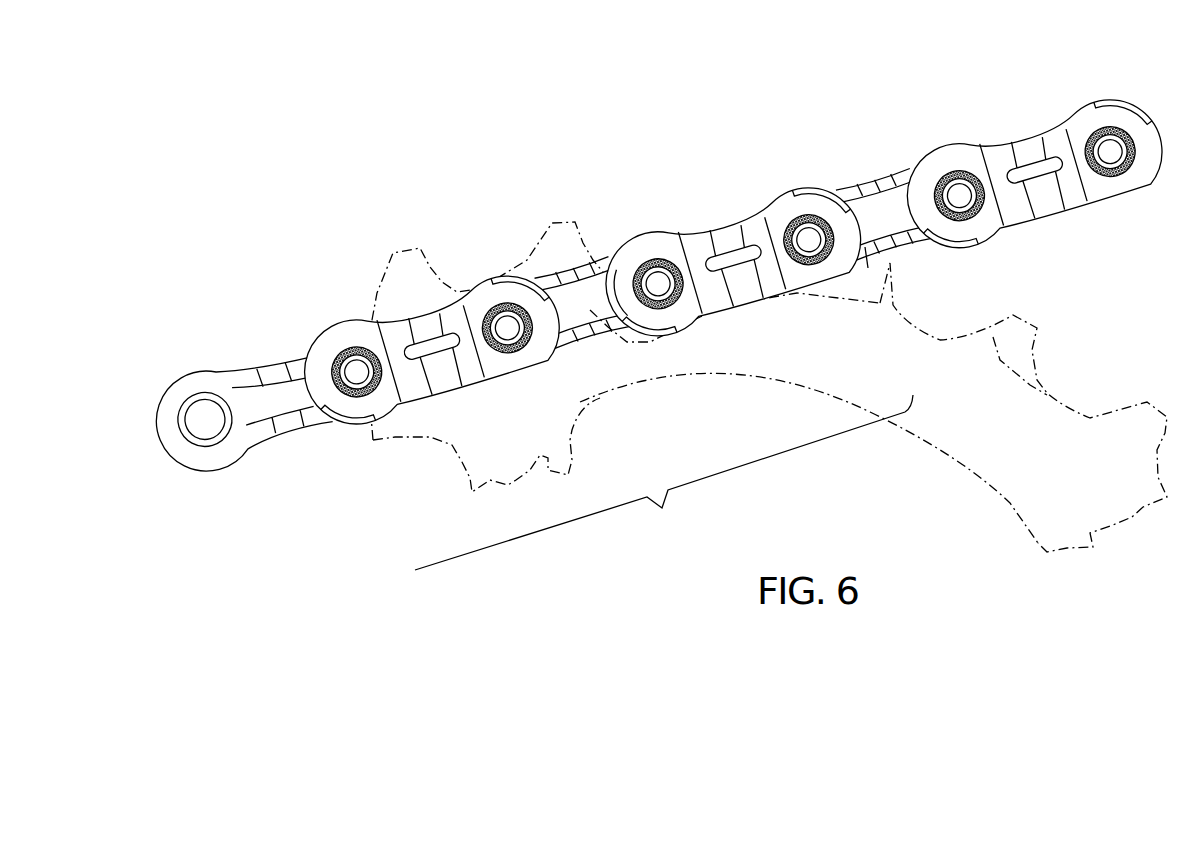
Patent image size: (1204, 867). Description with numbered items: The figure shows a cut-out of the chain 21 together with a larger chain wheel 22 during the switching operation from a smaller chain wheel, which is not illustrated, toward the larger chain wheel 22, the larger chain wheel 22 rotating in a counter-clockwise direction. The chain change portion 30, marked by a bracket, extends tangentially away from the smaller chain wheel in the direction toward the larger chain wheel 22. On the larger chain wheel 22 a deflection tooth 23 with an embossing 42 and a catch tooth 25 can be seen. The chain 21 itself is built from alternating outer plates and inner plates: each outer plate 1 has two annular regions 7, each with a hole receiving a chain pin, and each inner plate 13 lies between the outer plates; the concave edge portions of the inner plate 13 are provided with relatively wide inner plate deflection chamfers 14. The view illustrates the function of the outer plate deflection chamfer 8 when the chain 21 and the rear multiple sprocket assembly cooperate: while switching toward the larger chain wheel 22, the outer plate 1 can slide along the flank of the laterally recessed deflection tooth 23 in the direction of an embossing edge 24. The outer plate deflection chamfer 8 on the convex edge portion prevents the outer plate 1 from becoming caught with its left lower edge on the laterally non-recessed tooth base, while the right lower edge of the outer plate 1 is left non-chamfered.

The outer plate 1 is at (995, 135).
The annular region 7 is at (647, 247).
The outer plate deflection chamfer 8 is at (633, 275).
The inner plate 13 is at (878, 172).
The inner plate deflection chamfer 14 is at (570, 272).
The chain 21 is at (1108, 88).
The larger chain wheel 22 is at (1050, 452).
The deflection tooth 23 is at (707, 225).
The embossing edge 24 is at (720, 313).
The catch tooth 25 is at (865, 247).
The chain change portion 30 is at (664, 482).
The embossing 42 is at (630, 343).